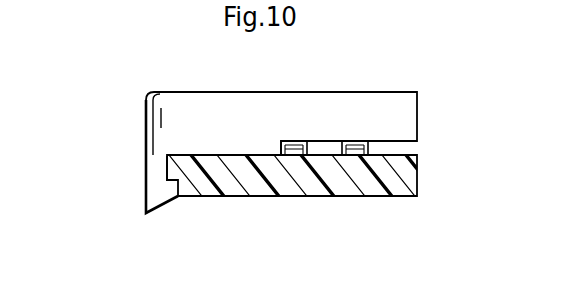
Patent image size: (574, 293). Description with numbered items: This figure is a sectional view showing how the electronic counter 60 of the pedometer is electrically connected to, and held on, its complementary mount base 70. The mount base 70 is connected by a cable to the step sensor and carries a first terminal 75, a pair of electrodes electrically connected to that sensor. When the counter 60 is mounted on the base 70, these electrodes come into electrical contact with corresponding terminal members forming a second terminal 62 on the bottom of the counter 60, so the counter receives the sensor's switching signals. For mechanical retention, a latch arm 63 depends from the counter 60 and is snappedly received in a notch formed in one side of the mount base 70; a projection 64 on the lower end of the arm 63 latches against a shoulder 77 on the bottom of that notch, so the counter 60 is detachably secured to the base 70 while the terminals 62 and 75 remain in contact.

The counter 60 is at (273, 102).
The second terminal 62 is at (355, 142).
The latch arm 63 is at (158, 160).
The projection 64 is at (178, 188).
The mount base 70 is at (286, 183).
The first terminal 75 is at (358, 157).
The shoulder 77 is at (168, 169).